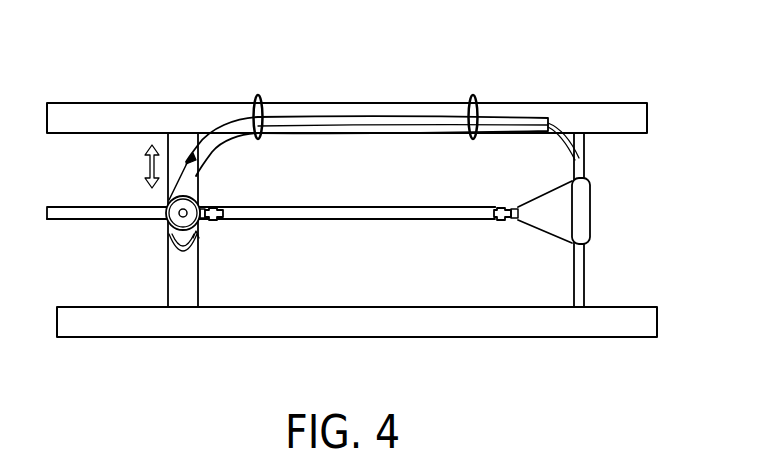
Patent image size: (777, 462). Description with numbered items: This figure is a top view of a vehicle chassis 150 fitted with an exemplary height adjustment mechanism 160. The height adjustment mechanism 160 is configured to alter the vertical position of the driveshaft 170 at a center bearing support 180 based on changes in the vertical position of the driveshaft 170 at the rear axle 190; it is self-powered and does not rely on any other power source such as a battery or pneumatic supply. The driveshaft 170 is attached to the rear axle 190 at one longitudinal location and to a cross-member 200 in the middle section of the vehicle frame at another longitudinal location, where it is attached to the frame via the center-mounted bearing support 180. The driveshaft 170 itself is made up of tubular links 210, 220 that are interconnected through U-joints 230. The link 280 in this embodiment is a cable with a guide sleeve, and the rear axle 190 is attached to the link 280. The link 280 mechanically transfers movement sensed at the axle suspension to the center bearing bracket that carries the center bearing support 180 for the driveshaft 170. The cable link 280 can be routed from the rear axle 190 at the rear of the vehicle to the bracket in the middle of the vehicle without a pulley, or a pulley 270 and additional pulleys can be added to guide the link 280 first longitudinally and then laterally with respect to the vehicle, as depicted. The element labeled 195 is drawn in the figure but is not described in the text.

The vehicle chassis 150 is at (675, 93).
The height adjustment mechanism 160 is at (632, 48).
The driveshaft 170 is at (265, 220).
The center bearing support 180 is at (208, 232).
The rear axle 190 is at (586, 279).
The handle 195 is at (563, 217).
The cross-member 200 is at (180, 275).
The driveshaft tubular link 210 is at (373, 212).
The driveshaft tubular link 220 is at (133, 212).
The U-joints 230 is at (221, 207).
The pulley 270 is at (186, 198).
The link 280 is at (337, 104).